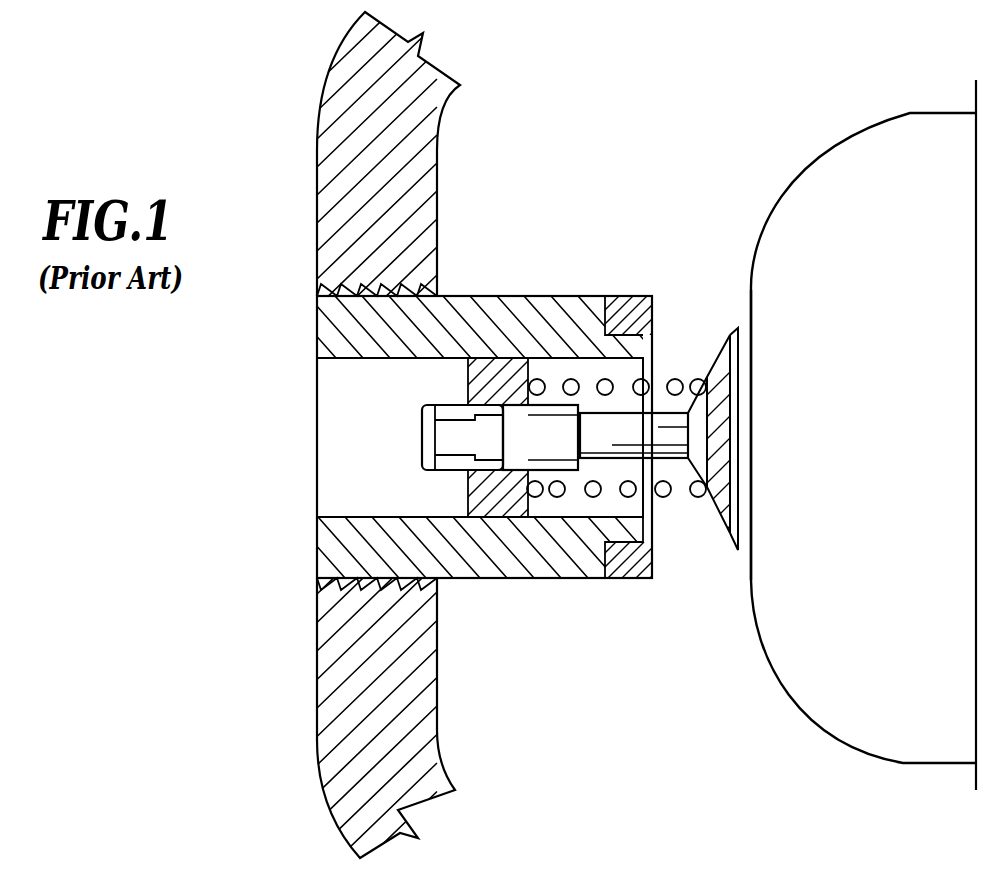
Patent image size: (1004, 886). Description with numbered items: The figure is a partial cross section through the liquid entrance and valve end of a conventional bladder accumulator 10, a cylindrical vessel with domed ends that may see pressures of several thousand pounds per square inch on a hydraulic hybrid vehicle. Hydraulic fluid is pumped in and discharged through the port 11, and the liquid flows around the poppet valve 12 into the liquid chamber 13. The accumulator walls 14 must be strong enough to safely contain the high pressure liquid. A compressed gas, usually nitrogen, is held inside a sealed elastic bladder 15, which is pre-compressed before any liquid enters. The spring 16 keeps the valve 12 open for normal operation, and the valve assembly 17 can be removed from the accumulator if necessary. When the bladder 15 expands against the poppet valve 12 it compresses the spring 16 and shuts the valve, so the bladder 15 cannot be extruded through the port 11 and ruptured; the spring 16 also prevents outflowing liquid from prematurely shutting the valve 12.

The bladder accumulator 10 is at (590, 712).
The port 11 is at (343, 440).
The poppet valve 12 is at (721, 434).
The liquid chamber 13 is at (735, 220).
The accumulator walls 14 is at (325, 105).
The elastic bladder 15 is at (764, 646).
The spring 16 is at (555, 497).
The valve assembly 17 is at (488, 296).